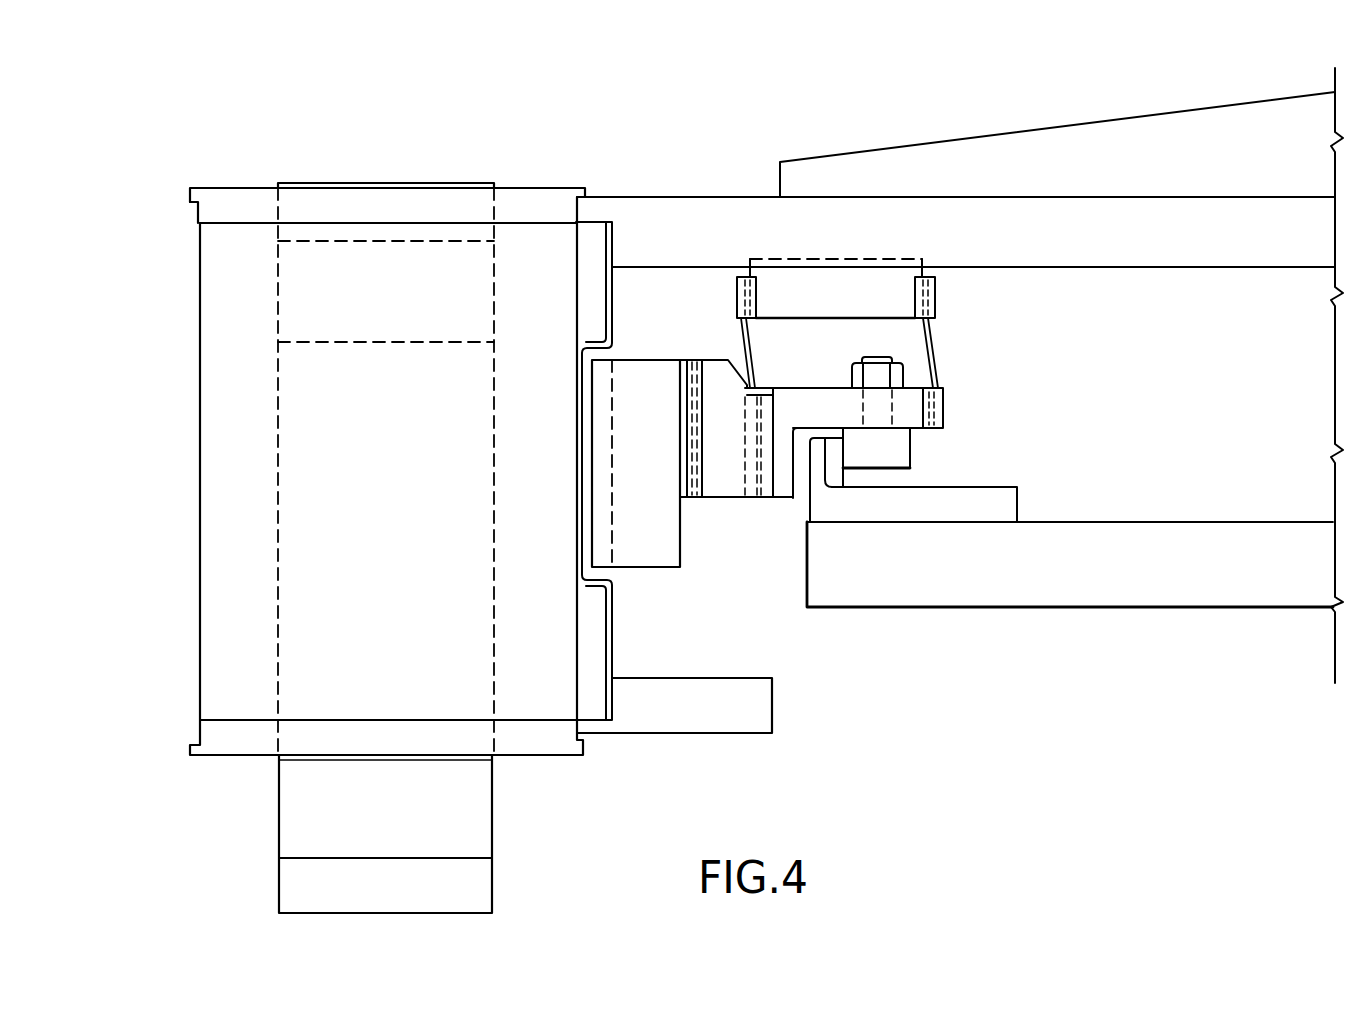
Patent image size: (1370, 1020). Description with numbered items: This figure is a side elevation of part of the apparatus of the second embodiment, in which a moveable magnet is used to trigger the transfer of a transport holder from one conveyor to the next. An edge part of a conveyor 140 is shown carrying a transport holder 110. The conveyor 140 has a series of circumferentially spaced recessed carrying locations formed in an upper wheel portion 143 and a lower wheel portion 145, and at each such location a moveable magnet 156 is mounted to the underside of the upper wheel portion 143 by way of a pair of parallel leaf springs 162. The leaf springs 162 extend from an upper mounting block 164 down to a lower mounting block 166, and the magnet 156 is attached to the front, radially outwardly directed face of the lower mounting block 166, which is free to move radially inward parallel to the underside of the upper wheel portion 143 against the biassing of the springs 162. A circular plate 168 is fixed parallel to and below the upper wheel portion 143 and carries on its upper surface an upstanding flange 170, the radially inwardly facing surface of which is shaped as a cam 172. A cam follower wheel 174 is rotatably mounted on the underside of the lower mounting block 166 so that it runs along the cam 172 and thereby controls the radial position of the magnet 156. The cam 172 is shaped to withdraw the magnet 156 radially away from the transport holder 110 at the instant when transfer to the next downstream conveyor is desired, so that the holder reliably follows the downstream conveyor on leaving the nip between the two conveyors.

The transport holder 110 is at (202, 650).
The conveyor 140 is at (807, 159).
The upper wheel portion 143 is at (1023, 258).
The lower wheel portion 145 is at (762, 706).
The moveable magnet 156 is at (624, 371).
The leaf springs 162 is at (757, 357).
The upper mounting block 164 is at (912, 303).
The lower mounting block 166 is at (920, 400).
The circular plate 168 is at (1080, 606).
The upstanding flange 170 is at (808, 498).
The cam 172 is at (847, 483).
The cam follower wheel 174 is at (906, 448).